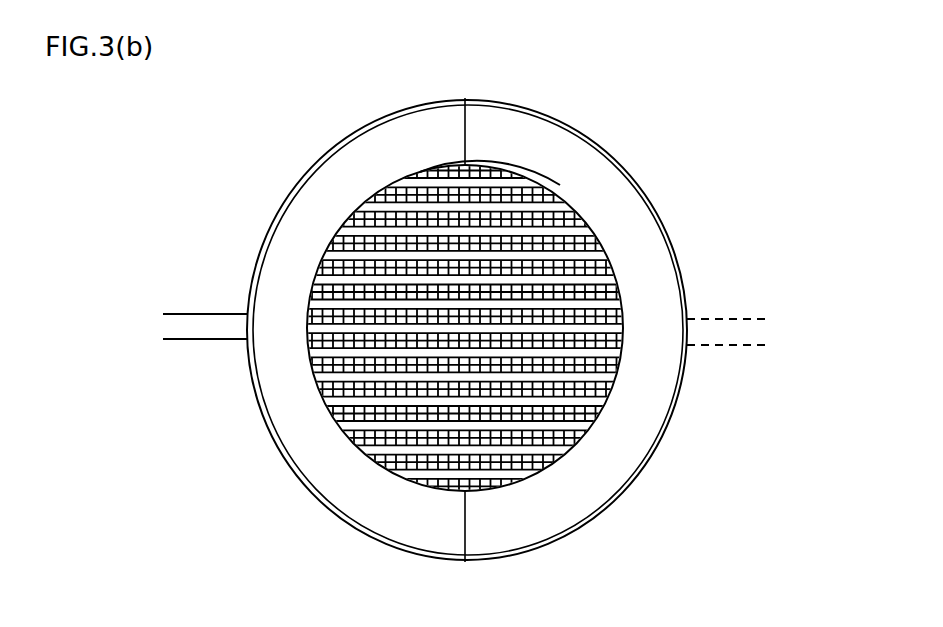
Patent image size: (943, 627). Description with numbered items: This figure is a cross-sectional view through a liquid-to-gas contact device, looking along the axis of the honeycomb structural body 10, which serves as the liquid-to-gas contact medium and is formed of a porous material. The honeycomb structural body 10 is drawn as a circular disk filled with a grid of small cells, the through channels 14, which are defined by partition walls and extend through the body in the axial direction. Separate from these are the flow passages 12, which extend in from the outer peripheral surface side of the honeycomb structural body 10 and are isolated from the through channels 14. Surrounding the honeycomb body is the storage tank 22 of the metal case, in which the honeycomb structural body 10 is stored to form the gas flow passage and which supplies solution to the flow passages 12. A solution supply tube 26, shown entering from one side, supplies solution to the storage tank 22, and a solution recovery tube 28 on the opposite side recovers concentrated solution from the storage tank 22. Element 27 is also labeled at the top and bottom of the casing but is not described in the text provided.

The honeycomb structural body 10 is at (499, 270).
The flow passages 12 is at (565, 207).
The through channels 14 is at (580, 215).
The storage tank 22 is at (668, 235).
The solution supply tube 26 is at (736, 332).
The partition plate 27 is at (462, 130).
The solution recovery tube 28 is at (193, 322).